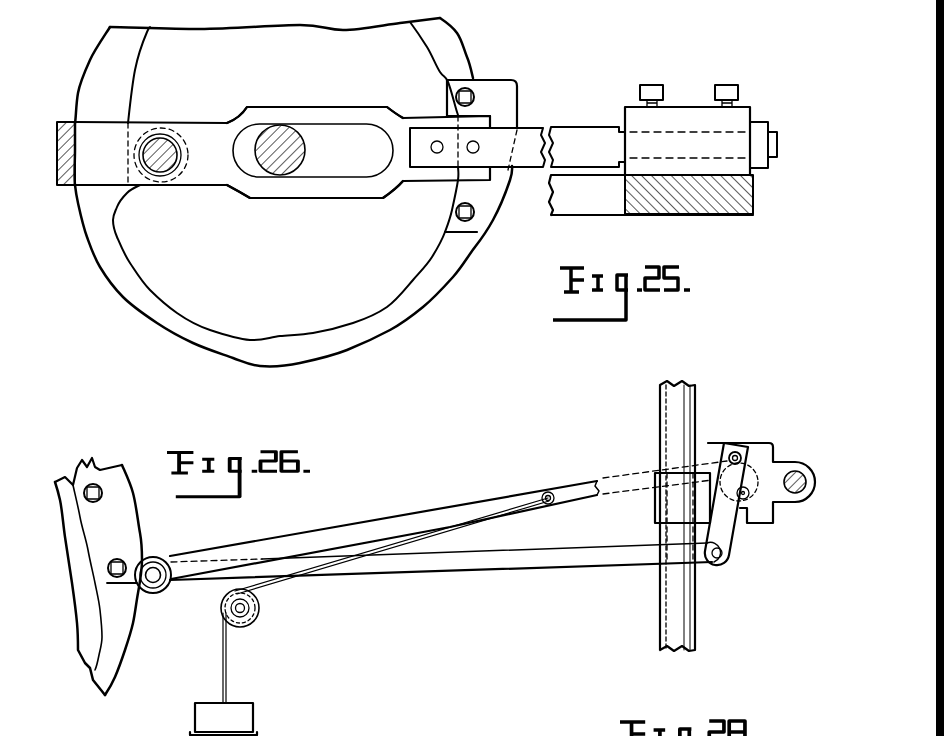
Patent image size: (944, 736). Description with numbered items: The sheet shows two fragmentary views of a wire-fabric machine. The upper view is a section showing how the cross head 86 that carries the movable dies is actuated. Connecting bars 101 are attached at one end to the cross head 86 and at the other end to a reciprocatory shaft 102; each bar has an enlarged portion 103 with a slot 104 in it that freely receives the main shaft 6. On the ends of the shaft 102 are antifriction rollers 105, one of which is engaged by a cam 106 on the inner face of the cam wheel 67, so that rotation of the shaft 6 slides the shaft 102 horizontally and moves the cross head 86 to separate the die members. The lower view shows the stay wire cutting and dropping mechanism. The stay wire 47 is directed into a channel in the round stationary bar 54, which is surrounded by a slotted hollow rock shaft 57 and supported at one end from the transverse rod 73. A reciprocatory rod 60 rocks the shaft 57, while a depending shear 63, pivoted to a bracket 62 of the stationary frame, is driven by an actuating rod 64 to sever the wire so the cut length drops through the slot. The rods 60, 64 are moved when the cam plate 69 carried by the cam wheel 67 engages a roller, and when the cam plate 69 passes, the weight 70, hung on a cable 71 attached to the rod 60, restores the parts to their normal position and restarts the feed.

In FIG. 25, the shaft 6 is at (283, 175).
In FIG. 26, the stay wire 47 is at (761, 483).
In FIG. 26, the stationary bar 54 is at (750, 478).
In FIG. 26, the rock shaft 57 is at (756, 498).
In FIG. 26, the reciprocatory rod 60 is at (498, 502).
In FIG. 26, the bracket 62 is at (682, 516).
In FIG. 26, the shear 63 is at (731, 537).
In FIG. 26, the actuating rod 64 is at (512, 567).
In FIG. 25, the cam wheel 67 is at (296, 192).
In FIG. 26, the cam wheel 67 is at (108, 662).
In FIG. 25, the cam plate 69 is at (519, 92).
In FIG. 26, the cam plate 69 is at (137, 528).
In FIG. 26, the weight 70 is at (248, 715).
In FIG. 26, the cable 71 is at (272, 588).
In FIG. 26, the transverse rod 73 is at (807, 475).
In FIG. 25, the cross head 86 is at (712, 210).
In FIG. 25, the connecting bars 101 is at (273, 152).
In FIG. 25, the reciprocatory shaft 102 is at (142, 155).
In FIG. 25, the enlarged portion 103 is at (360, 111).
In FIG. 25, the slot 104 is at (360, 171).
In FIG. 25, the antifriction rollers 105 is at (183, 178).
In FIG. 25, the cam 106 is at (122, 104).